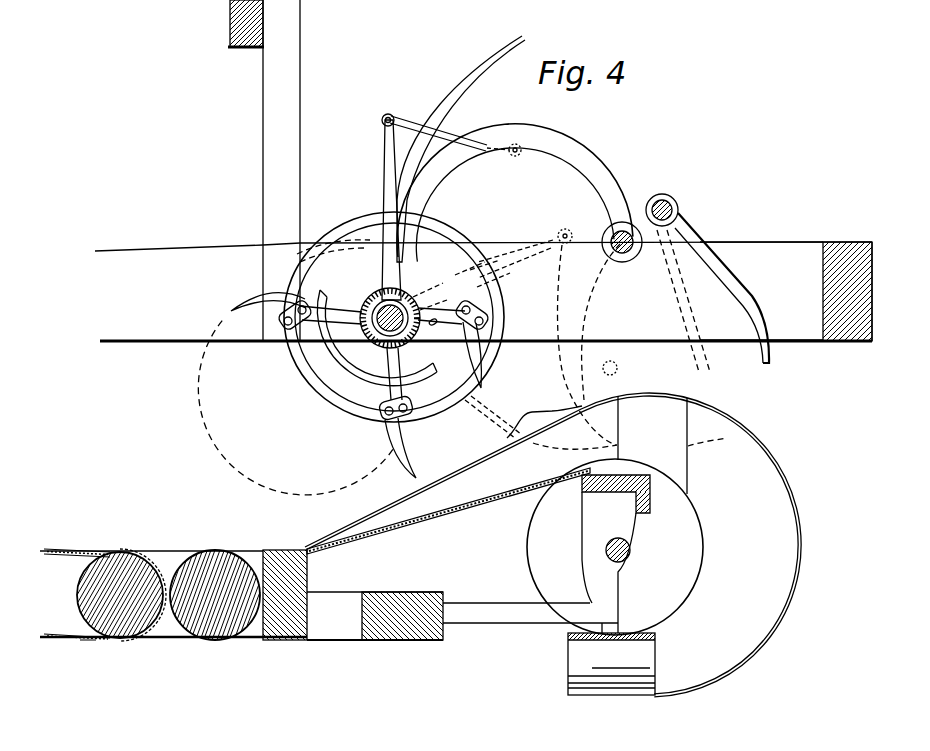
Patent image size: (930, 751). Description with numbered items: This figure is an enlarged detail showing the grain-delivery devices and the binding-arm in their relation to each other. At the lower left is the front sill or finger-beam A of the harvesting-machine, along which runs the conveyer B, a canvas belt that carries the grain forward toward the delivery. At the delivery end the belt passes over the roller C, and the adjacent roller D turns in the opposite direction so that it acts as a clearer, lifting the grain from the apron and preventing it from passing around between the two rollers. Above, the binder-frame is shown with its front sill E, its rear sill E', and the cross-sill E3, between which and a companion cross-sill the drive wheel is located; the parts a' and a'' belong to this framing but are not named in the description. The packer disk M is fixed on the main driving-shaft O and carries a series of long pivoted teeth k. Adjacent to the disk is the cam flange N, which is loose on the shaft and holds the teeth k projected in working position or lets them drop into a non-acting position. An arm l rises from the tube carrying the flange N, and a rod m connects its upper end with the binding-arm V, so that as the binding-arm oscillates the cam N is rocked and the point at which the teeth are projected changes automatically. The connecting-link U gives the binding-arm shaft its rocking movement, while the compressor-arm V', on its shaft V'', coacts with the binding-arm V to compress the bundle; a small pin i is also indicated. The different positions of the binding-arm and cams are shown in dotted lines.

The upper support block a' is at (234, 23).
The vertical standard a'' is at (281, 170).
The front sill of the binder-frame E is at (483, 291).
The rear sill of the binder-frame E' is at (761, 291).
The cross-sill E3 is at (847, 280).
The flanges N is at (397, 317).
The main driving-shaft O is at (400, 318).
The packers M is at (384, 313).
The teeth k is at (375, 340).
The arm l is at (445, 168).
The rod or bar m is at (488, 197).
The binding-arm V is at (562, 286).
The pin i is at (553, 232).
The connecting-link U is at (626, 257).
The shaft V'' is at (677, 204).
The compressor-arm V' is at (713, 292).
The front sill or finger-beam A is at (329, 595).
The conveyer B is at (105, 590).
The roller C is at (120, 595).
The roller D is at (215, 595).